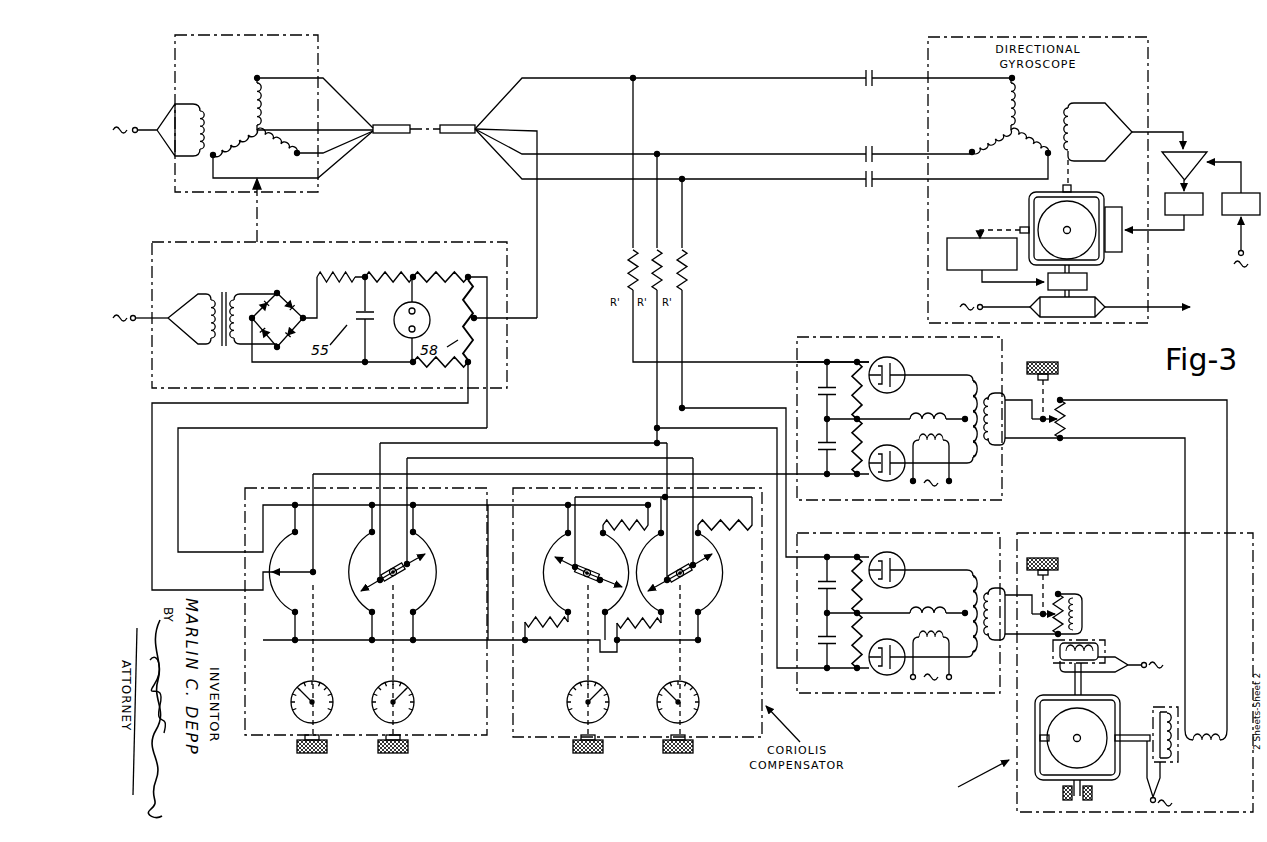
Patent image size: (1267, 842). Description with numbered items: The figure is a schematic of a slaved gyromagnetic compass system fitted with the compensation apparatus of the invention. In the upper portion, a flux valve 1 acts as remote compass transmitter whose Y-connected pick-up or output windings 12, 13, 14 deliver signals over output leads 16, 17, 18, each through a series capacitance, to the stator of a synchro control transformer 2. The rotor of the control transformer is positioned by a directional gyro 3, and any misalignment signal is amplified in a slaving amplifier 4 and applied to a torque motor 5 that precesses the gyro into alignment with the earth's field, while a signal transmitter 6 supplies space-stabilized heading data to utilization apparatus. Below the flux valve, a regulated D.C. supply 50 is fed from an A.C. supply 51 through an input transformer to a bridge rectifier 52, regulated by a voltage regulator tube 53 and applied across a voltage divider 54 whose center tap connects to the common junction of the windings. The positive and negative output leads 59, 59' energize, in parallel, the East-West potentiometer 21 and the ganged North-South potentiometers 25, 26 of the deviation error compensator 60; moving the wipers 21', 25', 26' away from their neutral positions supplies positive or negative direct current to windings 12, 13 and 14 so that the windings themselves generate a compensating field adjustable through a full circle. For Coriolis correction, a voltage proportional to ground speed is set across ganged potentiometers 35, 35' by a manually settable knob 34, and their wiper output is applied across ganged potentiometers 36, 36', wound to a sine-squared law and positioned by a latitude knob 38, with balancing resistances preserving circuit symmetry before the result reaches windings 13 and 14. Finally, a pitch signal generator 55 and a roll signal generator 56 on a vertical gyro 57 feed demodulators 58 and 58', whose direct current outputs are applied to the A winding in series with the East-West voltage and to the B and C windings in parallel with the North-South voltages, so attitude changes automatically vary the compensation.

The flux valve 1 is at (319, 47).
The synchro control transformer 2 is at (1020, 108).
The directional gyro 3 is at (1025, 210).
The slaving amplifier 4 is at (1200, 146).
The torque motor 5 is at (1122, 200).
The signal transmitter 6 is at (1105, 297).
The pick-up or output winding 12 is at (263, 119).
The pick-up or output winding 13 is at (193, 200).
The pick-up or output winding 14 is at (173, 130).
The output lead 16 is at (357, 98).
The output lead 17 is at (356, 147).
The output lead 18 is at (345, 170).
The East-West potentiometer 21 is at (298, 701).
The wiper 21' is at (291, 572).
The North-South potentiometer 25 is at (378, 659).
The wiper 25' is at (351, 572).
The North-South potentiometer 26 is at (433, 545).
The wiper 26' is at (443, 572).
The manually settable knob 34 is at (606, 746).
The ganged potentiometer 35 is at (570, 555).
The ganged potentiometer 35' is at (586, 572).
The ganged potentiometer 36 is at (680, 579).
The ganged potentiometer 36' is at (687, 568).
The manually settable knob 38 is at (694, 747).
The regulated D.C. supply 50 is at (440, 240).
The A.C. supply 51 is at (135, 338).
The bridge rectifier 52 is at (268, 288).
The voltage regulator tube 53 is at (340, 284).
The voltage divider 54 is at (461, 309).
The pitch signal generator 55 is at (1205, 744).
The roll signal generator 56 is at (1107, 640).
The vertical gyro 57 is at (1129, 530).
The demodulator 58 is at (931, 399).
The demodulator 58' is at (939, 595).
The output lead 59 is at (413, 534).
The output lead 59' is at (293, 476).
The deviation error compensator 60 is at (489, 721).